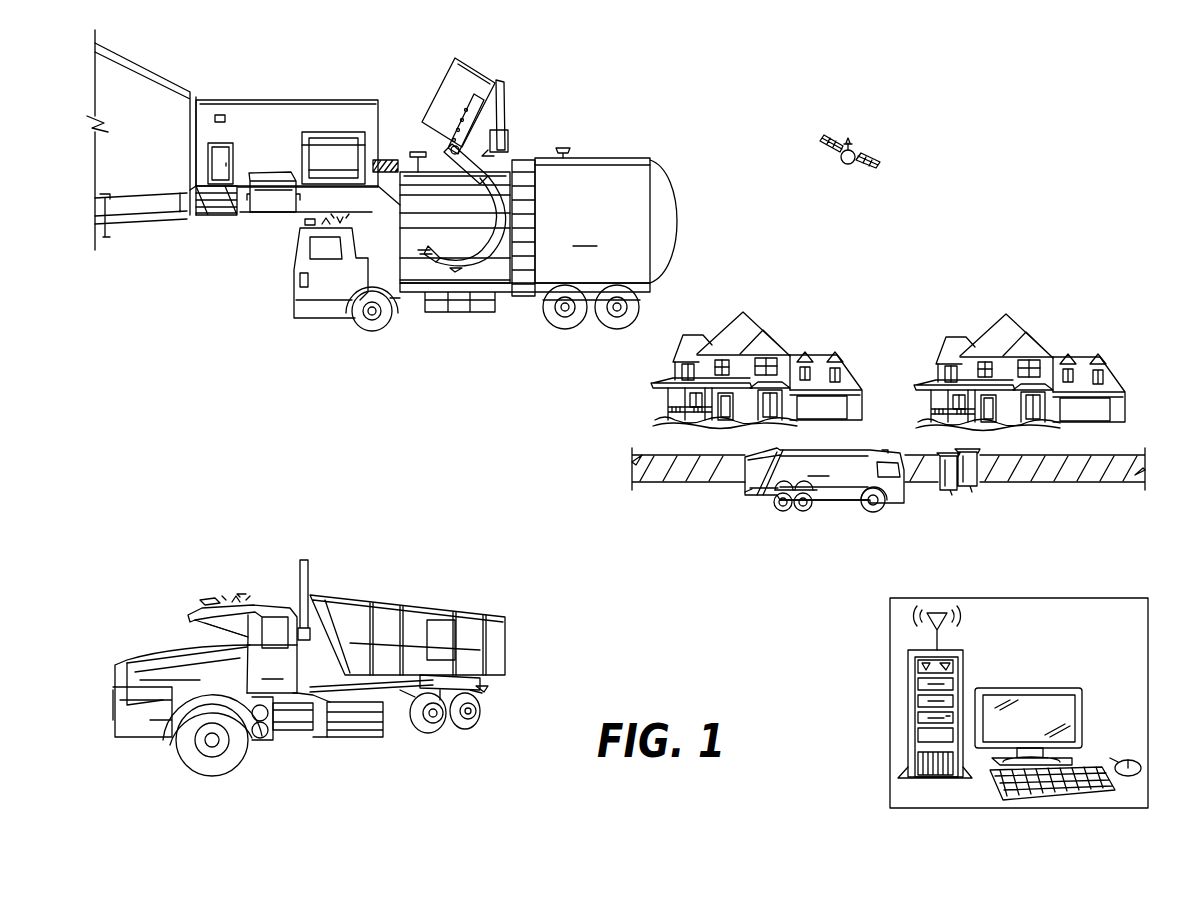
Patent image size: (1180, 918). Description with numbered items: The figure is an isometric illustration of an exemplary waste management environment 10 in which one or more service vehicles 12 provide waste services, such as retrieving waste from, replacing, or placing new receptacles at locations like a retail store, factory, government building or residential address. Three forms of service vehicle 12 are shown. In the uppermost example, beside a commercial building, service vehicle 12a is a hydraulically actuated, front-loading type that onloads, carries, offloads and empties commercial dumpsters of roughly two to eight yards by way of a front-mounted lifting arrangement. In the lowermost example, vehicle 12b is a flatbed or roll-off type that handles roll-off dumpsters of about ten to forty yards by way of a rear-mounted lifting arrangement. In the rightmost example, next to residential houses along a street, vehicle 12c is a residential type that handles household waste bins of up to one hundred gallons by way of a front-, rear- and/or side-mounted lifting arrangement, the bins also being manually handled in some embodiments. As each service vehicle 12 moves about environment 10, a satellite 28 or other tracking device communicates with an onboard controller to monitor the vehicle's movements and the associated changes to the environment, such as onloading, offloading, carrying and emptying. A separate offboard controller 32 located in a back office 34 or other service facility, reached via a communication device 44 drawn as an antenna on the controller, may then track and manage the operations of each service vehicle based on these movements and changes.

The waste management environment 10 is at (551, 542).
The service vehicle 12 is at (538, 367).
The front-loading service vehicle 12a is at (485, 205).
The roll-off vehicle 12b is at (297, 668).
The residential vehicle 12c is at (824, 480).
The satellite 28 is at (841, 162).
The offboard controller 32 is at (963, 672).
The back office 34 is at (992, 703).
The communication device 44 is at (937, 642).